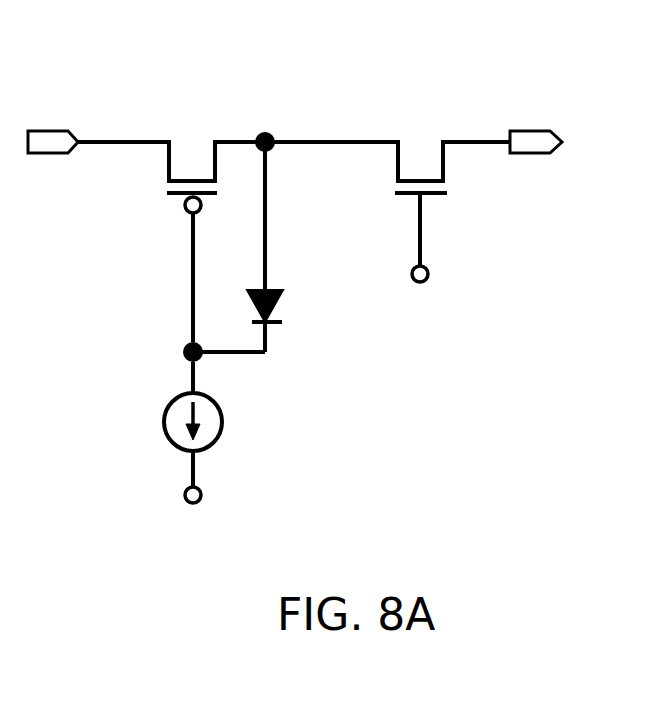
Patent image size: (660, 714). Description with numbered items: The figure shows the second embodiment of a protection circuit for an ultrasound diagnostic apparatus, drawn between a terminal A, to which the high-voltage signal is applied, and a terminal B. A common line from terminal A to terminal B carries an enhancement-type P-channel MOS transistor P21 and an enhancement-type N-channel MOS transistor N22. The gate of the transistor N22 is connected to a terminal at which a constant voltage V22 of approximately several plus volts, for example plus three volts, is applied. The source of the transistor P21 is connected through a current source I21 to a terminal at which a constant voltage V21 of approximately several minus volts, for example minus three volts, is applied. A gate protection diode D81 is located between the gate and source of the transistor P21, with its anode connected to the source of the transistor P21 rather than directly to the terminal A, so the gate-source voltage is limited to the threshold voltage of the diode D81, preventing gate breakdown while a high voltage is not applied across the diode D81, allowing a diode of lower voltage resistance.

The terminal A is at (43, 130).
The terminal B is at (535, 130).
The enhancement-type P-channel MOS transistor P21 is at (165, 203).
The enhancement-type N-channel MOS transistor N22 is at (392, 203).
The constant voltage V22 is at (433, 268).
The diode D81 is at (280, 310).
The current source I21 is at (164, 427).
The constant voltage V21 is at (183, 496).